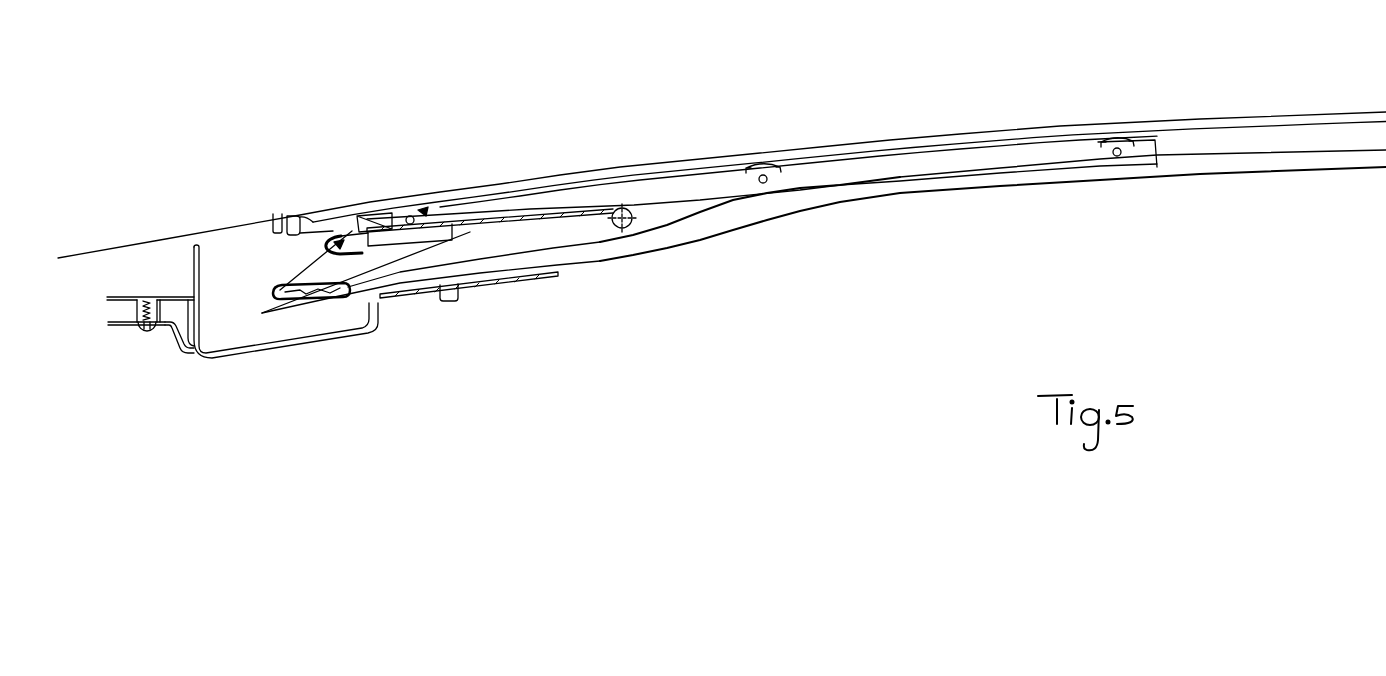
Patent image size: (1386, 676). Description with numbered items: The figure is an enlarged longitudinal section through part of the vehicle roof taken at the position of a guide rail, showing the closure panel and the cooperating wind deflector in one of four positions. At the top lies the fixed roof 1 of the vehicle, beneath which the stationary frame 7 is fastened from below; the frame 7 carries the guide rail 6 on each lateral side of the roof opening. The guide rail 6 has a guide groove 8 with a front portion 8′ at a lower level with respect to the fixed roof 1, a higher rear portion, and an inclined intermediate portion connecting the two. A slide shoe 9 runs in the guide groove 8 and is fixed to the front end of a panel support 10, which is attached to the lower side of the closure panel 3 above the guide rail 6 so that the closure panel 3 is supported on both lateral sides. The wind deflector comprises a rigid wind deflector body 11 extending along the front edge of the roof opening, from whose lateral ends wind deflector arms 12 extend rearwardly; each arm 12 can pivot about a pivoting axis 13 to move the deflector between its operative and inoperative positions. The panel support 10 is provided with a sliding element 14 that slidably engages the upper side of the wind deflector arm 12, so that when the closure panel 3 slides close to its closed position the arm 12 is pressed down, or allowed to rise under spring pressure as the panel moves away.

The fixed roof 1 is at (160, 236).
The closure panel 3 is at (777, 157).
The guide rail 6 is at (1198, 182).
The frame 7 is at (293, 346).
The guide groove 8 is at (1103, 182).
The front portion of the guide groove 8′ is at (561, 257).
The slide shoe 9 is at (332, 297).
The panel support 10 is at (621, 194).
The wind deflector body 11 is at (341, 235).
The wind deflector arm 12 is at (518, 222).
The pivoting axis 13 is at (655, 205).
The sliding element 14 is at (388, 214).